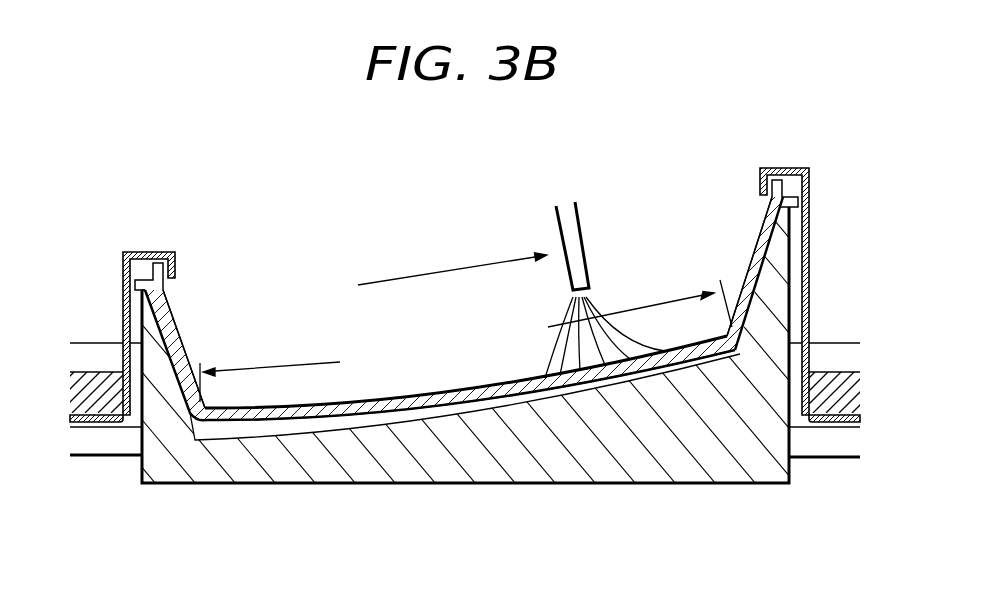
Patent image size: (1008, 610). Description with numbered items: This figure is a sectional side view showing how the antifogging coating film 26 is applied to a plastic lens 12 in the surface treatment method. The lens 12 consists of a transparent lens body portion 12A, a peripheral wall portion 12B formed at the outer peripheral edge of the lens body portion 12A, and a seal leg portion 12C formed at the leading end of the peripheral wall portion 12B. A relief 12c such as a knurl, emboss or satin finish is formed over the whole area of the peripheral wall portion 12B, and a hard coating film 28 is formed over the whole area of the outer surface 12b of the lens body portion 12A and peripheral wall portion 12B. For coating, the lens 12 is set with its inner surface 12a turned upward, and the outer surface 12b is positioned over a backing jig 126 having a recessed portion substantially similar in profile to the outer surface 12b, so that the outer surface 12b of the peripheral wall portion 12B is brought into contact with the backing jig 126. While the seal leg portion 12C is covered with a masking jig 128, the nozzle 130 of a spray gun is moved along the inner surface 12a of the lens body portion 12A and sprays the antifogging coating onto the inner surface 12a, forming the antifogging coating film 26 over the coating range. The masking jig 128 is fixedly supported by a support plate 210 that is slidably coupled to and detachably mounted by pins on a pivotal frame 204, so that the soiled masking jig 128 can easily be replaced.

The lens 12 is at (481, 340).
The lens body portion 12A is at (400, 407).
The peripheral wall portion 12B is at (166, 331).
The seal leg portion 12C is at (150, 268).
The inner surface 12a is at (668, 347).
The outer surface 12b is at (523, 398).
The relief 12c is at (178, 318).
The antifogging coating film 26 is at (345, 397).
The hard coating film 28 is at (431, 400).
The backing jig 126 is at (645, 465).
The masking jig 128 is at (155, 251).
The nozzle 130 is at (556, 210).
The pivotal frame 204 is at (815, 447).
The support plate 210 is at (818, 372).